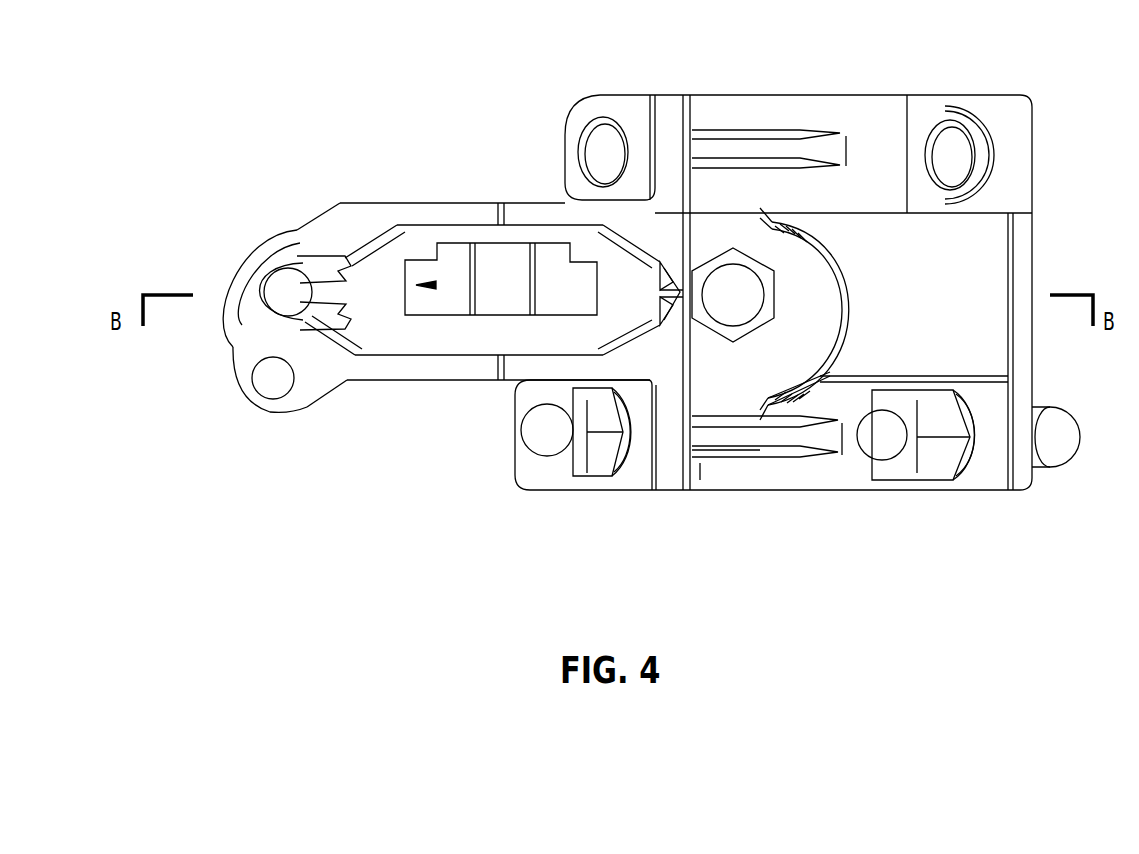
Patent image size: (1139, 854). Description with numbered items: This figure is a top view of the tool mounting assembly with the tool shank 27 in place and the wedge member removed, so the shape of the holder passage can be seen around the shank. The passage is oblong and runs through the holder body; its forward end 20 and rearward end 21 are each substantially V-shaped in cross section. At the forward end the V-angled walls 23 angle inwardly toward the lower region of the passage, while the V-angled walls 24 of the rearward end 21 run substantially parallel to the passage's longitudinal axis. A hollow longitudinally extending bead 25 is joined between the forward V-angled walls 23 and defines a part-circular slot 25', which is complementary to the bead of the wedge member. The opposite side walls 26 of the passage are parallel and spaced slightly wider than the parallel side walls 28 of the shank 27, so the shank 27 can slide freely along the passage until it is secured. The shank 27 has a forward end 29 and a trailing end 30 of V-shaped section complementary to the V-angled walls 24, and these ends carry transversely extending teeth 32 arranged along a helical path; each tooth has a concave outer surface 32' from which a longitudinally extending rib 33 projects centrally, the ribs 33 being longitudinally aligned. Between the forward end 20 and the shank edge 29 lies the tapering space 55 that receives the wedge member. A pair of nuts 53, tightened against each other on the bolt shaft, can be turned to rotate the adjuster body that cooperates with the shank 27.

The forward end of the passage 20 is at (340, 203).
The rearward end of the passage 21 is at (650, 238).
The forward V-angled walls 23 is at (378, 225).
The V-angled walls of the opposite end 24 is at (662, 236).
The hollow longitudinally extending bead 25 is at (270, 288).
The part-circular slot 25' is at (243, 343).
The side walls of the passage 26 is at (505, 217).
The shank 27 is at (437, 258).
The parallel side walls of the shank 28 is at (400, 200).
The forward end of the shank 29 is at (372, 318).
The trailing end of the shank 30 is at (656, 332).
The transversely extending teeth 32 is at (499, 340).
The outer surface of tooth 32' is at (353, 387).
The longitudinally extending rib 33 is at (332, 280).
The nuts 53 is at (748, 252).
The tapering space 55 is at (300, 318).